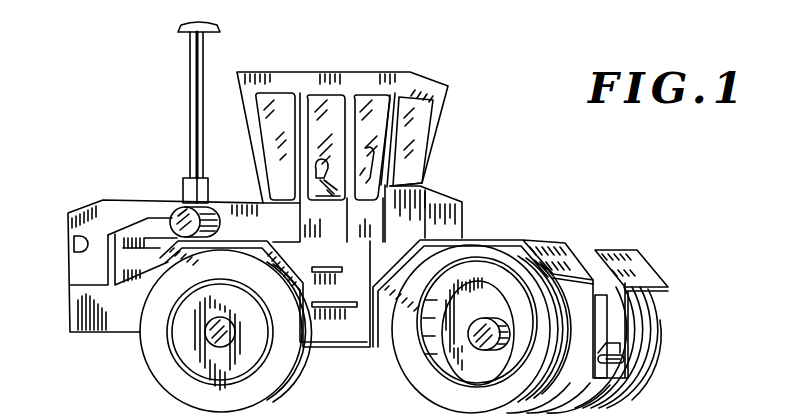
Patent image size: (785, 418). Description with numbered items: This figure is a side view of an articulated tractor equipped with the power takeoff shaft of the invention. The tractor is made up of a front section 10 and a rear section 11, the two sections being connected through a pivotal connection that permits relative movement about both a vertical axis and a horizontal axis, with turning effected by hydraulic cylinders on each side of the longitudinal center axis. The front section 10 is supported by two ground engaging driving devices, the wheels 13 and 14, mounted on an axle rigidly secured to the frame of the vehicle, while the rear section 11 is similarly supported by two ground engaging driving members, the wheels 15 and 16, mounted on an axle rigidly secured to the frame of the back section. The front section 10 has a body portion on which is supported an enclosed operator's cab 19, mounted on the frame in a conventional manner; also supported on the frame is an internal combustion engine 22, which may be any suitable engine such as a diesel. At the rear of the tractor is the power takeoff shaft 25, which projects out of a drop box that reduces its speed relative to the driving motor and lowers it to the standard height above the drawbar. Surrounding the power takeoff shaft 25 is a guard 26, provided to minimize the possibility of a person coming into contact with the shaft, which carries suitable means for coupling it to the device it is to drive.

The front section 10 is at (140, 200).
The rear section 11 is at (563, 221).
The wheel 13 is at (205, 331).
The wheel 14 is at (287, 384).
The wheel 15 is at (411, 387).
The wheel 16 is at (654, 329).
The operator's cab 19 is at (431, 146).
The internal combustion engine 22 is at (123, 256).
The power takeoff shaft 25 is at (610, 377).
The guard 26 is at (610, 346).